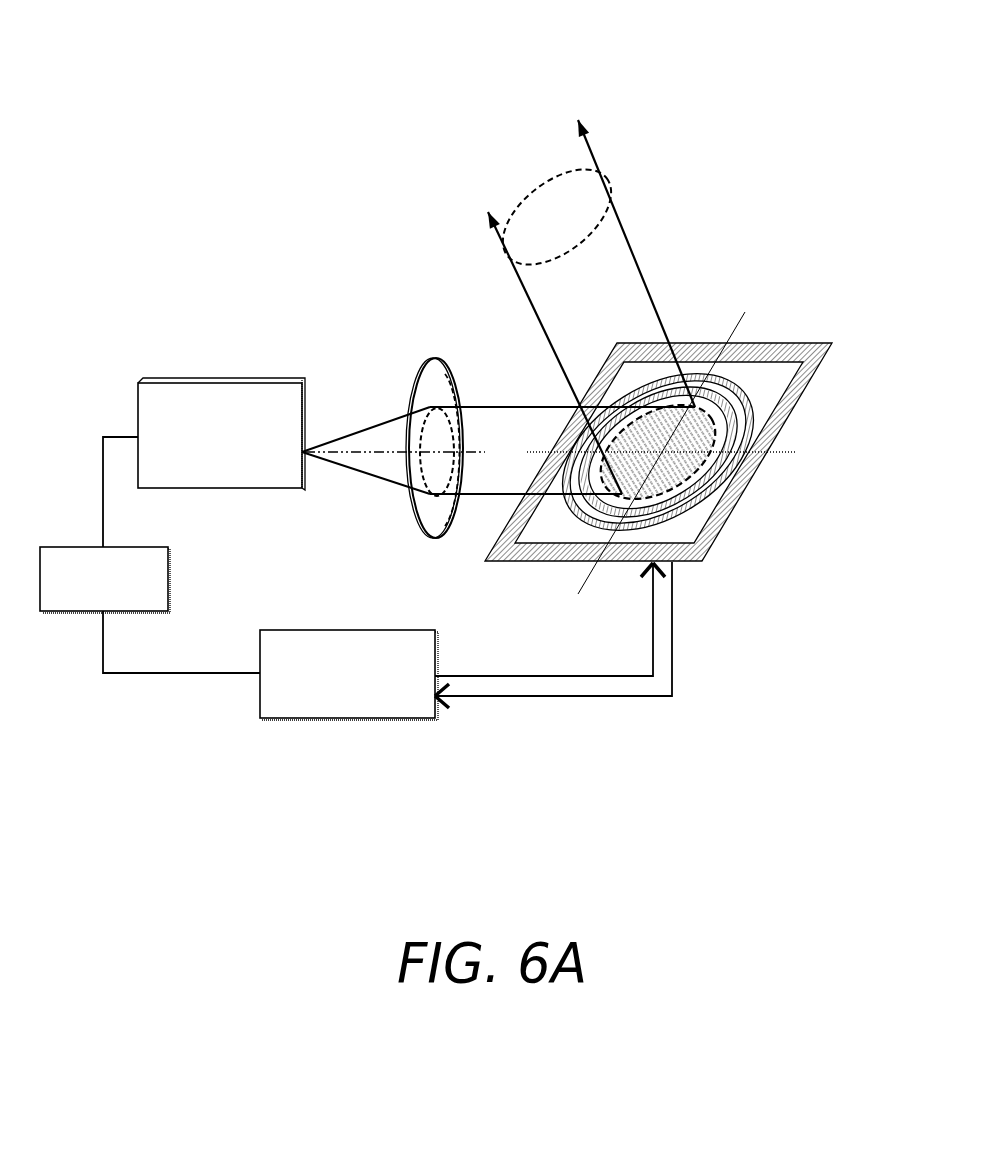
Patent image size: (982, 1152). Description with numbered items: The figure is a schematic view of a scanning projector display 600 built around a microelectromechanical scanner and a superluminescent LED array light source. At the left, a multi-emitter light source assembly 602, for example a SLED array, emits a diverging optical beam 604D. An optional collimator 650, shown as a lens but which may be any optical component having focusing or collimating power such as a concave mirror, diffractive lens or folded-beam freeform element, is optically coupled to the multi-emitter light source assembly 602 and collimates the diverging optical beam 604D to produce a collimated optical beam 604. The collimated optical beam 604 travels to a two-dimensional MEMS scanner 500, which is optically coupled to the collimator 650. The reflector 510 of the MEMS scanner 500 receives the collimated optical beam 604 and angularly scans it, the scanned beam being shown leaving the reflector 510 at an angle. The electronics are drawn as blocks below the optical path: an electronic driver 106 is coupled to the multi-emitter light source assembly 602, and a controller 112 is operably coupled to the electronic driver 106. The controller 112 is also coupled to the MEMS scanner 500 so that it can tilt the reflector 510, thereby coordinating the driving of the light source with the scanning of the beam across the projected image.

The scanning projector display 600 is at (350, 97).
The multi-emitter light source assembly 602 is at (240, 451).
The electronic driver 106 is at (127, 591).
The controller 112 is at (362, 688).
The collimator 650 is at (397, 391).
The collimated optical beam 604 is at (610, 236).
The diverging optical beam 604D is at (368, 478).
The 2D MEMS scanner 500 is at (685, 416).
The reflector 510 is at (735, 428).